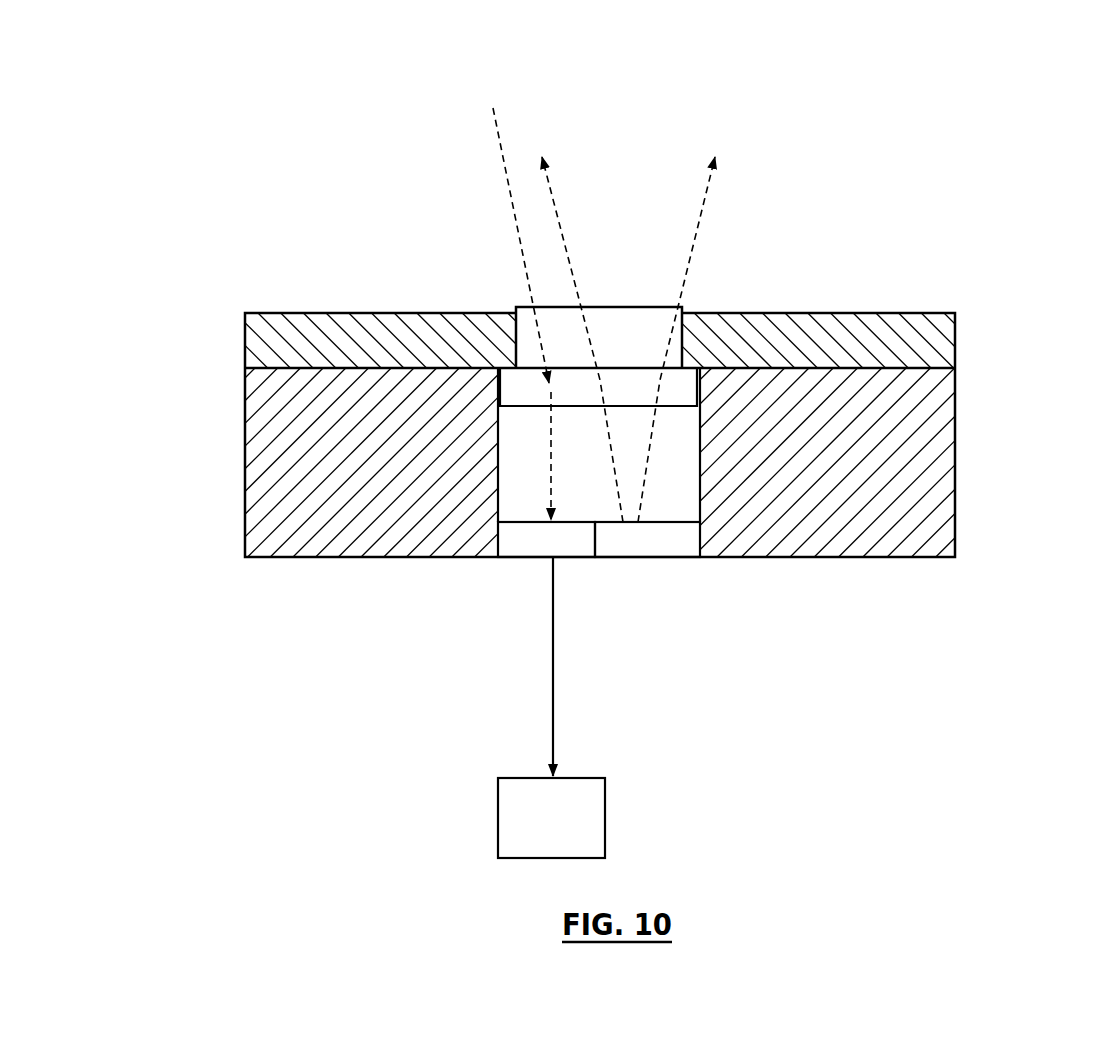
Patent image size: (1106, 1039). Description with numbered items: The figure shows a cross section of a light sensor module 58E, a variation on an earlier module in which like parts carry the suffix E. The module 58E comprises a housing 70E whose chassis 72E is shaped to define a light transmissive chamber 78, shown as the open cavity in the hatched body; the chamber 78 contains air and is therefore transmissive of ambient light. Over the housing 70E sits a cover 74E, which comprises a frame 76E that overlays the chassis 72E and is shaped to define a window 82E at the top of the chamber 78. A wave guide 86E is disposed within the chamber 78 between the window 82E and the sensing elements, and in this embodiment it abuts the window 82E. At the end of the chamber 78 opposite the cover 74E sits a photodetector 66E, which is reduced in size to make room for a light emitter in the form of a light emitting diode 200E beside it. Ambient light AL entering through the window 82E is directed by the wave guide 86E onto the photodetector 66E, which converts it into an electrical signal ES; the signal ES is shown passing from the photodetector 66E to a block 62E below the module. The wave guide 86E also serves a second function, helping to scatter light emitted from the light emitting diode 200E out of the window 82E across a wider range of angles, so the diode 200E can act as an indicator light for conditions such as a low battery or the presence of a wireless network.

The light sensor module 58E is at (240, 591).
The cover 74E is at (243, 329).
The frame 76E is at (263, 350).
The housing 70E is at (243, 453).
The chassis 72E is at (297, 419).
The window 82E is at (521, 306).
The wave guide 86E is at (698, 377).
The light transmissive chamber 78 is at (533, 491).
The photodetector 66E is at (572, 551).
The light emitting diode 200E is at (680, 551).
The controller 62E is at (575, 832).
The ambient light AL is at (502, 155).
The electrical signal ES is at (546, 708).